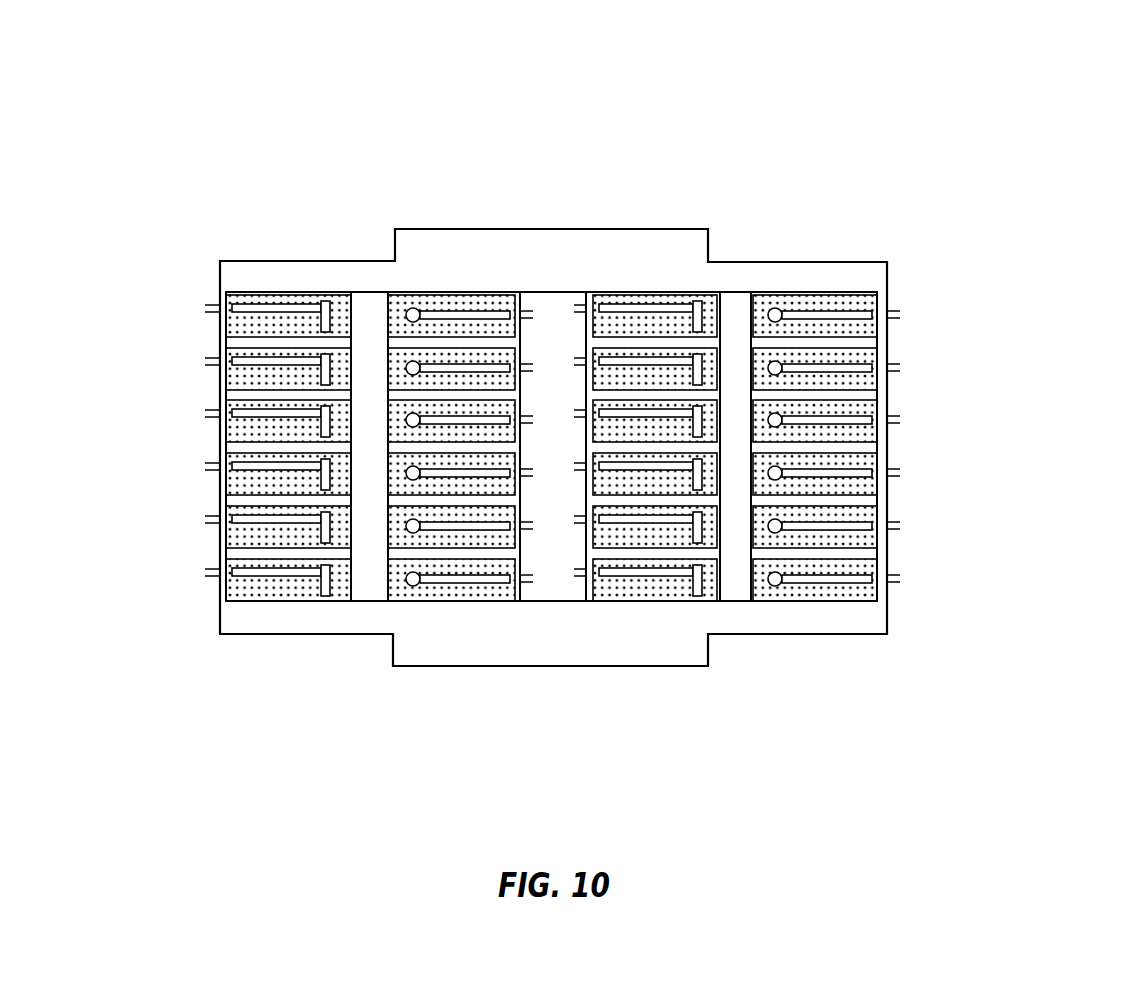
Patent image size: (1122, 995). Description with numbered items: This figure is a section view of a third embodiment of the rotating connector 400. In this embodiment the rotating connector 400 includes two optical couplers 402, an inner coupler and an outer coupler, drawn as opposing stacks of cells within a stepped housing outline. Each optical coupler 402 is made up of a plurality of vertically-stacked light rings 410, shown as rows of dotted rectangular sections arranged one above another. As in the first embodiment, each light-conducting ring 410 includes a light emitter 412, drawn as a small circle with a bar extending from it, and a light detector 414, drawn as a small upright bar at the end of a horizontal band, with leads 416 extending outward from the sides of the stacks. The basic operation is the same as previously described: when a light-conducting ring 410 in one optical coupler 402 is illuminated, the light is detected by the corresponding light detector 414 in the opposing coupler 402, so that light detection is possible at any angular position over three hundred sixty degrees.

The rotating connector 400 is at (647, 118).
The optical coupler 402 is at (343, 240).
The light ring 410 is at (250, 318).
The light emitter 412 is at (405, 586).
The light detector 414 is at (325, 601).
The leads 416 is at (215, 570).